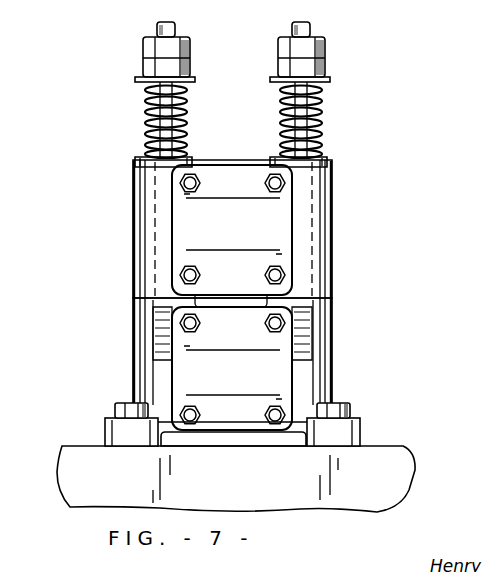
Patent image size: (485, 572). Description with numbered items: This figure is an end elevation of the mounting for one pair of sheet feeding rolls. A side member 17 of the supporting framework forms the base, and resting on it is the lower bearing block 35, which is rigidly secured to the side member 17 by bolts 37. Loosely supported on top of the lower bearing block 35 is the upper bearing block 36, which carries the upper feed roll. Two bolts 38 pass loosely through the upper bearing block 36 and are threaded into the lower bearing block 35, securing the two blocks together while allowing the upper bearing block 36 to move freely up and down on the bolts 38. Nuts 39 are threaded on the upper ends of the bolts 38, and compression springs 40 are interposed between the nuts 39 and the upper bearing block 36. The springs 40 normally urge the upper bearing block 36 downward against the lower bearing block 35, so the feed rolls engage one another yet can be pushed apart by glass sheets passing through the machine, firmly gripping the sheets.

The side member 17 is at (82, 468).
The lower bearing block 35 is at (318, 365).
The upper bearing block 36 is at (318, 222).
The bolts 37 is at (115, 410).
The bolts 38 is at (278, 145).
The nuts 39 is at (283, 67).
The compression springs 40 is at (278, 117).